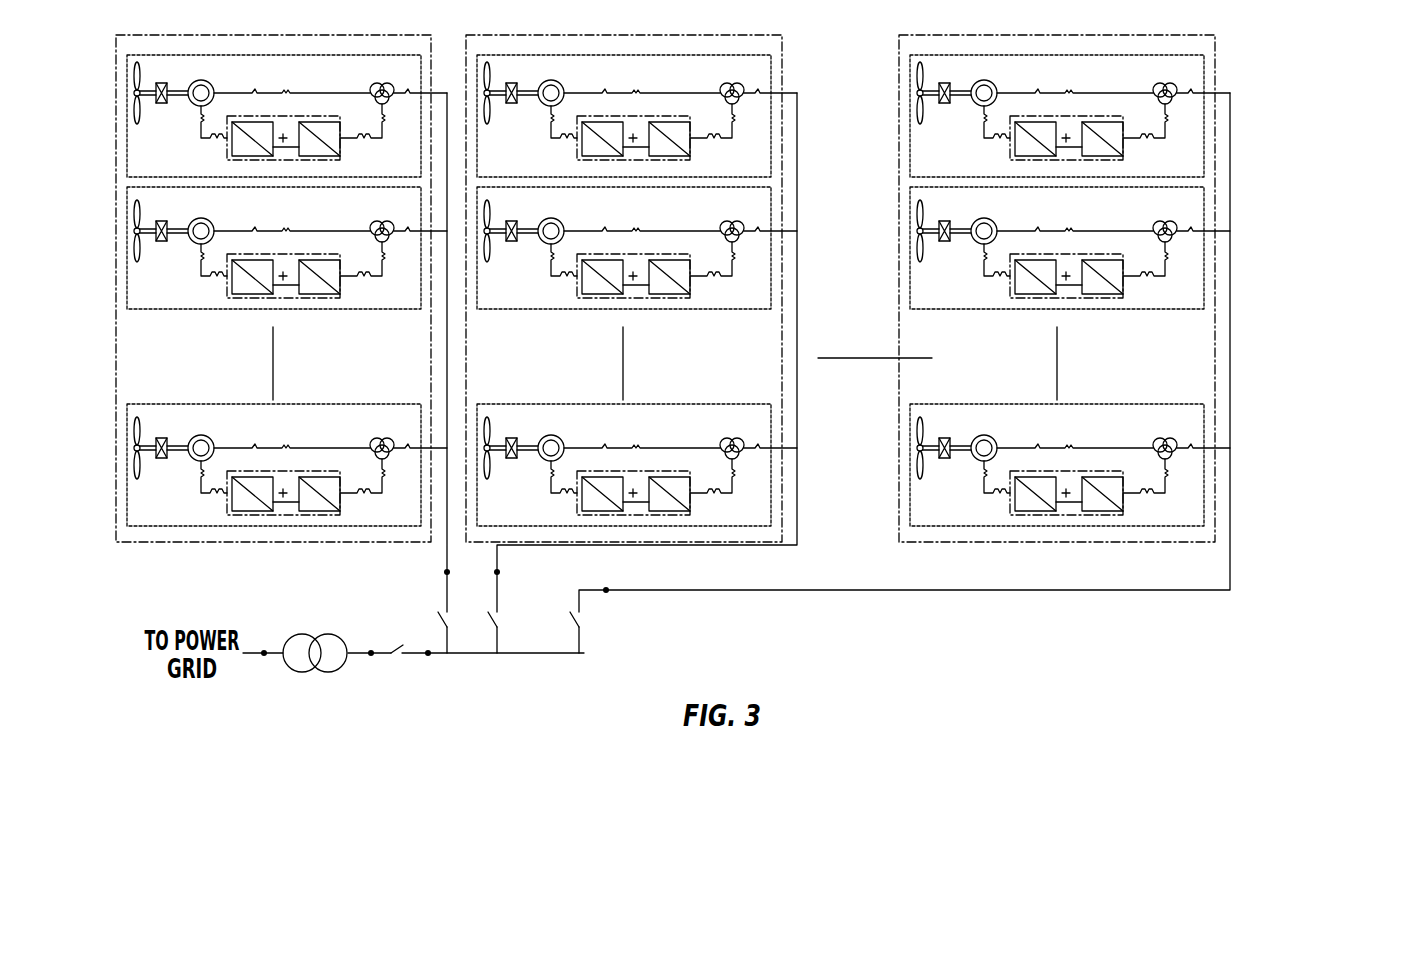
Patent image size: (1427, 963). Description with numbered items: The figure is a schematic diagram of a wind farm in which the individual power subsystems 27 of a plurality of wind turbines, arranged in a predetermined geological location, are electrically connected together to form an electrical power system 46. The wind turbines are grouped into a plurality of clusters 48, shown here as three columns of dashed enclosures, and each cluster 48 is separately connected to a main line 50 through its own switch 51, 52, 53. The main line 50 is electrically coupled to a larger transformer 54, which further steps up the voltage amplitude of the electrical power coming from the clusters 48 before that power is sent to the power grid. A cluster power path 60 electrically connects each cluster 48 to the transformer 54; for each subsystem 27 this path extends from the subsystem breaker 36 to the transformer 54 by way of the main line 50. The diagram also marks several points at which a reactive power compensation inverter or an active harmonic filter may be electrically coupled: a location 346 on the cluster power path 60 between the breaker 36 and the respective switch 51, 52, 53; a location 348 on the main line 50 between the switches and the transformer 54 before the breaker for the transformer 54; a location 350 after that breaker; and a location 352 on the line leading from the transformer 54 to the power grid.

The electrical power system 46 is at (1340, 98).
The power subsystem 27 is at (127, 128).
The subsystem breaker 36 is at (420, 77).
The cluster 48 is at (182, 542).
The cluster power path 60 is at (447, 350).
The main line 50 is at (528, 654).
The transformer 54 is at (315, 633).
The switch 51 is at (436, 620).
The switch 52 is at (488, 620).
The switch 53 is at (566, 620).
The location 346 is at (444, 568).
The location 348 is at (428, 660).
The location 350 is at (371, 660).
The location 352 is at (264, 660).